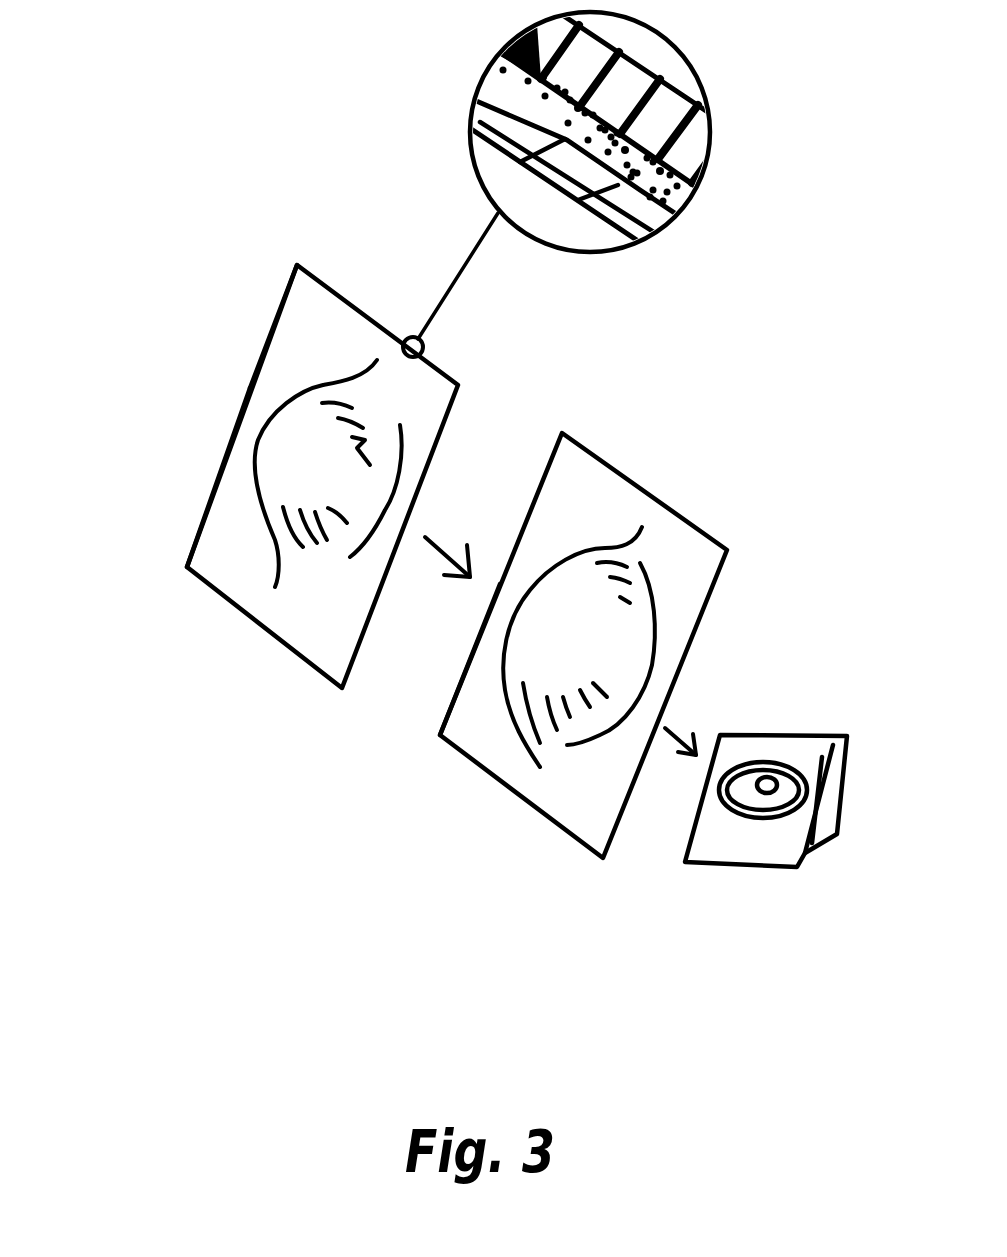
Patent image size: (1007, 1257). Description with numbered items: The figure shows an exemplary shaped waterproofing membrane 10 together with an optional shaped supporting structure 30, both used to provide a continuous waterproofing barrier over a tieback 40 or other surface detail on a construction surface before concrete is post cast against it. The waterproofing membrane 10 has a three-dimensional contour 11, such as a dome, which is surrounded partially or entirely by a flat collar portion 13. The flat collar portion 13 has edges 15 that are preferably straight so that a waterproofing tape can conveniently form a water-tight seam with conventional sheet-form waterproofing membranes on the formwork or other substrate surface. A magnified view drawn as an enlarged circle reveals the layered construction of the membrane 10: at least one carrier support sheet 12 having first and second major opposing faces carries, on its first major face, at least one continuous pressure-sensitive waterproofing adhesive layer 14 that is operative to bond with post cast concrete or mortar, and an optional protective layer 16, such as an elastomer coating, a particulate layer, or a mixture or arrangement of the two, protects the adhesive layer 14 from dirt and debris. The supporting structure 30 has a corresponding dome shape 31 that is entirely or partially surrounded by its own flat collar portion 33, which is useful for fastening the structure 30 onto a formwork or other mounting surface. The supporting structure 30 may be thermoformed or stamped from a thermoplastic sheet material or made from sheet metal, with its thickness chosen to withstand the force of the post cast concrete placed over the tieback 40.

The shaped waterproofing membrane 10 is at (197, 620).
The three-dimensional contour 11 is at (277, 447).
The carrier support sheet 12 is at (713, 162).
The flat collar portion 13 is at (223, 532).
The pressure-sensitive waterproofing adhesive layer 14 is at (693, 208).
The edge 15 is at (262, 350).
The protective layer 16 is at (650, 243).
The supporting structure 30 is at (440, 770).
The dome shape 31 is at (537, 628).
The flat collar portion 33 is at (470, 712).
The tieback 40 is at (693, 888).